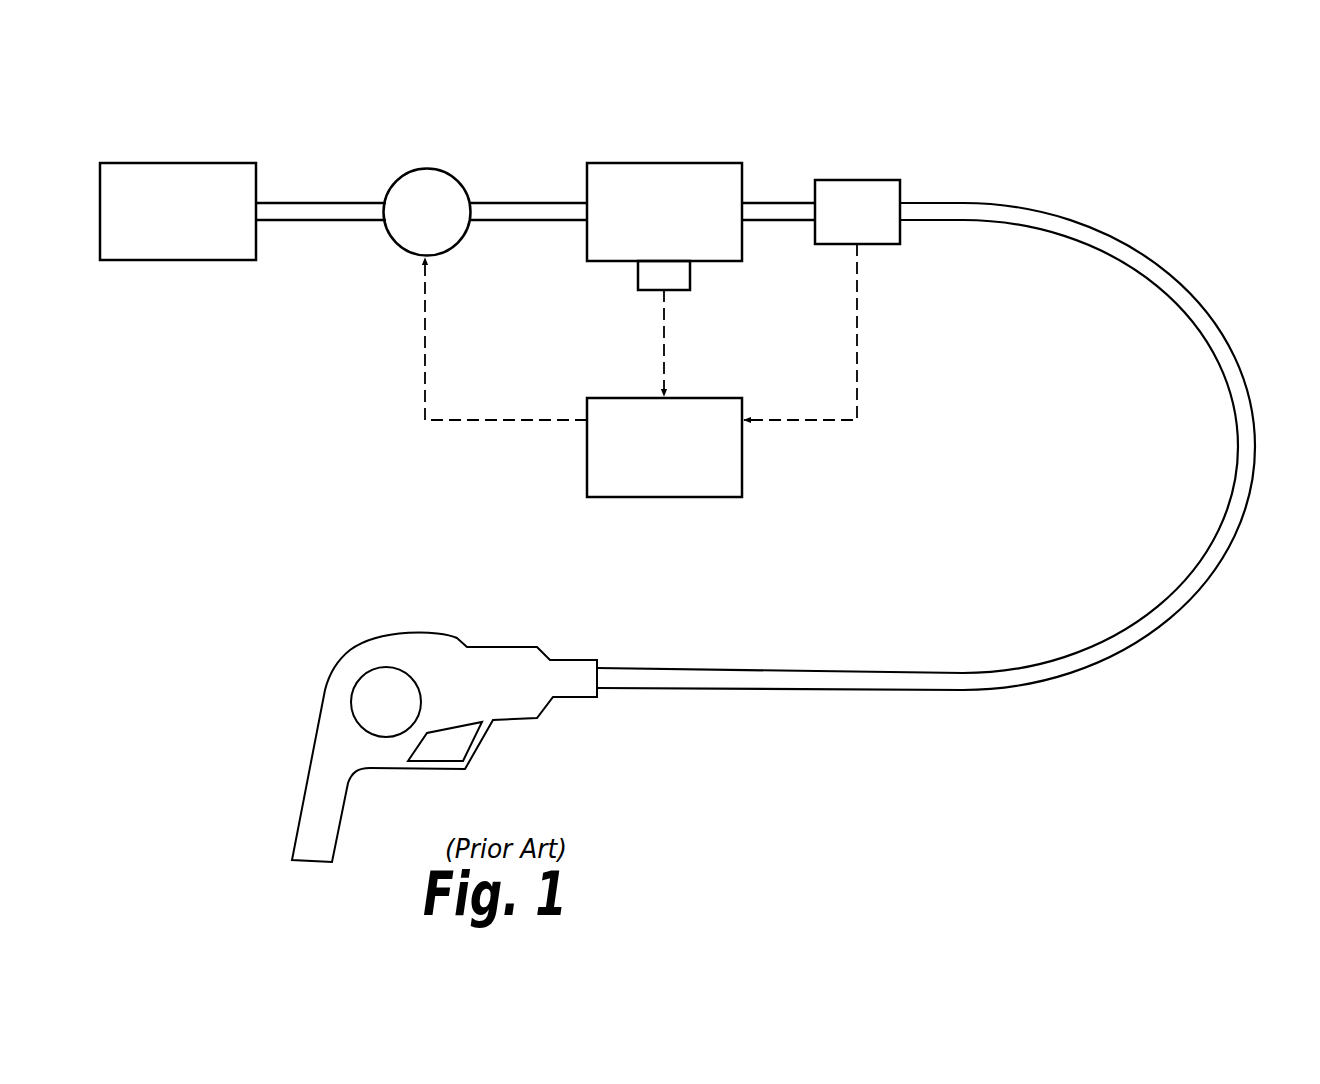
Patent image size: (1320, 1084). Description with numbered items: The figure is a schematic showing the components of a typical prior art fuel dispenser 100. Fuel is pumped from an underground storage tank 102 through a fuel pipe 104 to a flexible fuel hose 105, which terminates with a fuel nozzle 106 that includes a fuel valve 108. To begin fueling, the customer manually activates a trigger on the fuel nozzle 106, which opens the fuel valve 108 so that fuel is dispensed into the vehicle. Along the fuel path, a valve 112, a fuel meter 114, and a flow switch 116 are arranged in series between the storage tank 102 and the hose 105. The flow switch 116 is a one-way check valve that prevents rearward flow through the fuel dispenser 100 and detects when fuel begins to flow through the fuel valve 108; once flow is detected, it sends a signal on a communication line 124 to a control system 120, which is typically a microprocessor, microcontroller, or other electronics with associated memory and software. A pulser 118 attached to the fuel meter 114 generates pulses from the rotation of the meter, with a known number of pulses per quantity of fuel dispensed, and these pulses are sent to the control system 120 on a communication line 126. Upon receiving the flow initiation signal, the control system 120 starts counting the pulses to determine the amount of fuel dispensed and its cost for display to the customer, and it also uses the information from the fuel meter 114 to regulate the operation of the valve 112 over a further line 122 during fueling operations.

The fuel dispenser 100 is at (1240, 185).
The underground storage tank 102 is at (200, 227).
The fuel pipe 104 is at (311, 206).
The flexible fuel hose 105 is at (1013, 684).
The fuel nozzle 106 is at (517, 645).
The fuel valve 108 is at (378, 667).
The valve 112 is at (449, 227).
The fuel meter 114 is at (686, 227).
The flow switch 116 is at (879, 227).
The pulser 118 is at (690, 277).
The control system 120 is at (686, 460).
The control signal line 122 is at (425, 335).
The communication line 124 is at (857, 342).
The communication line 126 is at (663, 358).